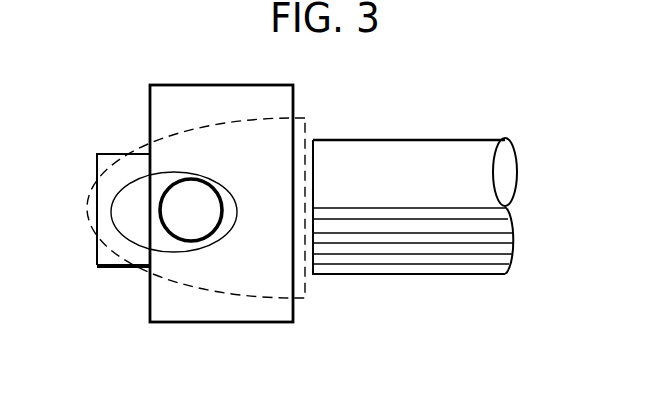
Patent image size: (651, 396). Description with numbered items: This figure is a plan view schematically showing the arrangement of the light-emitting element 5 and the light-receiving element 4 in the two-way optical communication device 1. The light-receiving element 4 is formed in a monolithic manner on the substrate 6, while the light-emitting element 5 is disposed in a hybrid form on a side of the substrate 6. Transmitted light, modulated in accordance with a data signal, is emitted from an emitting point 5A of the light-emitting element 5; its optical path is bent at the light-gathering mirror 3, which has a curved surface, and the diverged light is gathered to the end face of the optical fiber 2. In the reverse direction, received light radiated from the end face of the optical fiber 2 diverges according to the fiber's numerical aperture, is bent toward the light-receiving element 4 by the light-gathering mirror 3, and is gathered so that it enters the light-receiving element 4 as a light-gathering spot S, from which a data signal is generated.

The two-way optical communication device 1 is at (117, 83).
The optical fiber 2 is at (386, 152).
The light-gathering mirror 3 is at (256, 117).
The light-receiving element 4 is at (222, 192).
The light-emitting element 5 is at (102, 268).
The emitting point 5A is at (137, 210).
The substrate 6 is at (203, 92).
The light-gathering spot S is at (170, 253).